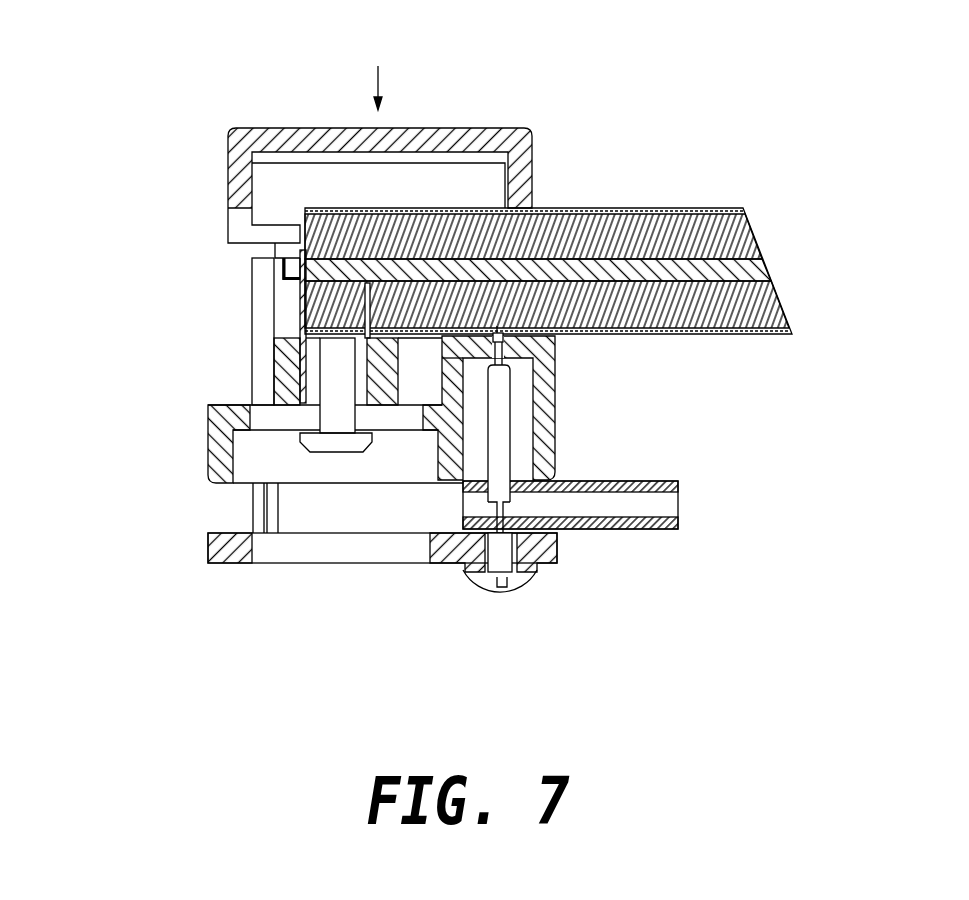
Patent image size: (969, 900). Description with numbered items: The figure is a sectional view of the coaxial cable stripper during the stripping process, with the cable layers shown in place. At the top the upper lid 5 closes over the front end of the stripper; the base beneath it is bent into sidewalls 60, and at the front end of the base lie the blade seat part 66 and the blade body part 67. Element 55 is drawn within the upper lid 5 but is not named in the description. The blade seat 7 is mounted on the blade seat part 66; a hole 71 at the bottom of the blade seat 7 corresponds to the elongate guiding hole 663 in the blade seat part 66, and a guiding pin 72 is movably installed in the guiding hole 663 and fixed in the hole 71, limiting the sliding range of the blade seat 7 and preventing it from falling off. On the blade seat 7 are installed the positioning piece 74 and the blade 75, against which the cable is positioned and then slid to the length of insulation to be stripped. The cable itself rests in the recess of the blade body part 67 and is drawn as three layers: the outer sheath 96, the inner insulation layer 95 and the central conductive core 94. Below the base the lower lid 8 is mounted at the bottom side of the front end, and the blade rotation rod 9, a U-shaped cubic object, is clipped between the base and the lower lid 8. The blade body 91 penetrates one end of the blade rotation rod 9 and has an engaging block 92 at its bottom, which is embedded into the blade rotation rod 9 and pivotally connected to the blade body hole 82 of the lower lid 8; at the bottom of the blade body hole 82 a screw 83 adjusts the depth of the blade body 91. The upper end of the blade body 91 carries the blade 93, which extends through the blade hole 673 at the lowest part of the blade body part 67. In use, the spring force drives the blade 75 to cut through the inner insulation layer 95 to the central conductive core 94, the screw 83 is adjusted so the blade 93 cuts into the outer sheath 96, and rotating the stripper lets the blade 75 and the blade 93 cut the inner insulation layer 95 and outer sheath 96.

The upper lid 5 is at (315, 140).
The cover plate 55 is at (422, 188).
The outer sheath 96 is at (592, 214).
The inner insulation layer 95 is at (606, 235).
The central conductive core 94 is at (668, 268).
The positioning piece 74 is at (298, 270).
The sidewalls 60 is at (255, 279).
The blade 75 is at (367, 290).
The hole 71 is at (272, 382).
The blade seat 7 is at (276, 386).
The elongate guiding hole 663 is at (257, 416).
The guiding pin 72 is at (330, 408).
The blade seat part 66 is at (212, 460).
The blade 93 is at (504, 344).
The blade hole 673 is at (528, 356).
The blade body part 67 is at (575, 408).
The blade body 91 is at (502, 445).
The engaging block 92 is at (527, 500).
The blade rotation rod 9 is at (627, 530).
The lower lid 8 is at (215, 564).
The blade body hole 82 is at (460, 563).
The screw 83 is at (512, 584).